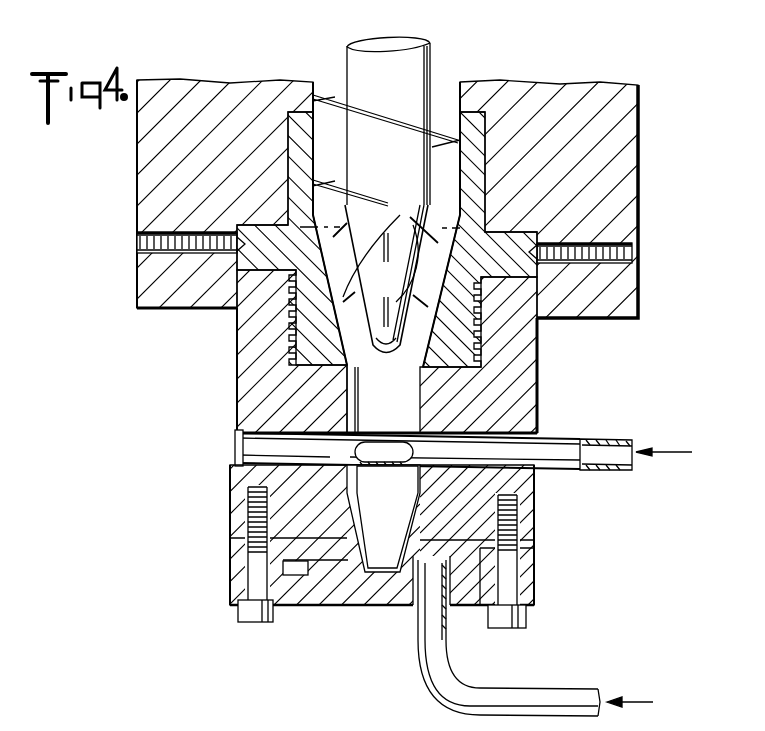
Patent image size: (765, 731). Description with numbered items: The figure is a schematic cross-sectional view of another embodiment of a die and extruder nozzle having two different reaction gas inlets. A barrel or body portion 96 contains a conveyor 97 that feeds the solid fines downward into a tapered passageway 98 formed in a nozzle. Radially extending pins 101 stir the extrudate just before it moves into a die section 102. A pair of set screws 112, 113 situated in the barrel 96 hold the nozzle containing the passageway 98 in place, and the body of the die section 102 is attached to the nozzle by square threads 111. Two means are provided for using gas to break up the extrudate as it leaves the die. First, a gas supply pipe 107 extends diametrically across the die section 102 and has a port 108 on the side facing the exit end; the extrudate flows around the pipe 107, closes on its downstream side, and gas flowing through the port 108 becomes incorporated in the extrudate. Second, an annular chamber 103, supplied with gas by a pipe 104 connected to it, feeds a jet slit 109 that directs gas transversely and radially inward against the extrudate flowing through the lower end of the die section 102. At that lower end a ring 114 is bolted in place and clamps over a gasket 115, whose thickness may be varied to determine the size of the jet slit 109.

The barrel 96 is at (620, 128).
The conveyor 97 is at (384, 72).
The tapered passageway 98 is at (440, 262).
The radially extending pins 101 is at (345, 230).
The die section 102 is at (410, 402).
The annular chamber 103 is at (334, 578).
The pipe 104 is at (538, 693).
The gas supply pipe 107 is at (560, 438).
The port 108 is at (366, 466).
The jet slit 109 is at (380, 553).
The square threads 111 is at (287, 318).
The set screw 112 is at (578, 241).
The set screw 113 is at (173, 232).
The ring 114 is at (527, 582).
The gasket 115 is at (303, 528).